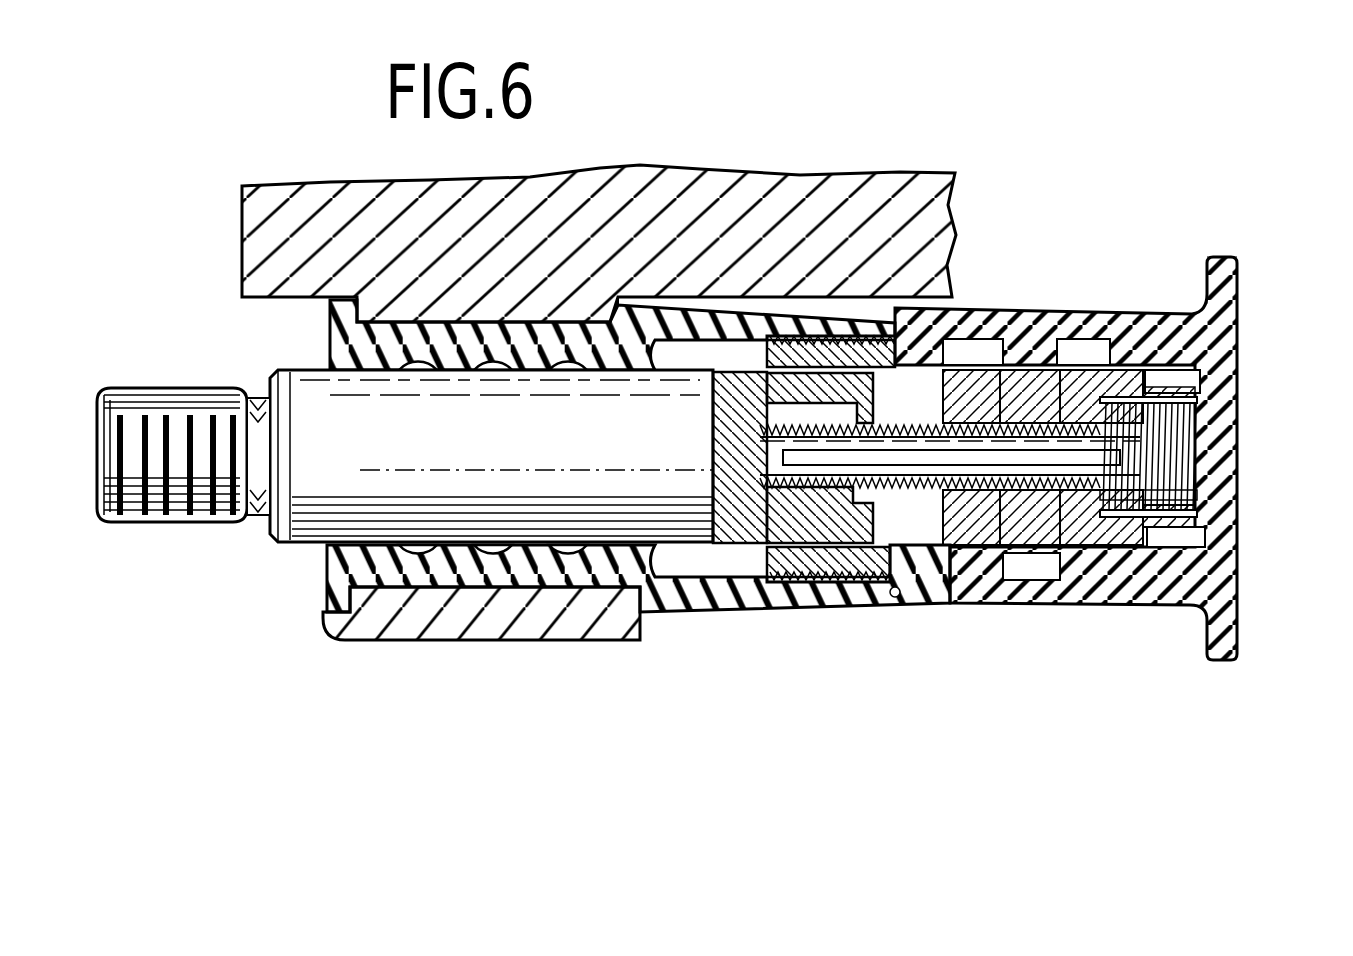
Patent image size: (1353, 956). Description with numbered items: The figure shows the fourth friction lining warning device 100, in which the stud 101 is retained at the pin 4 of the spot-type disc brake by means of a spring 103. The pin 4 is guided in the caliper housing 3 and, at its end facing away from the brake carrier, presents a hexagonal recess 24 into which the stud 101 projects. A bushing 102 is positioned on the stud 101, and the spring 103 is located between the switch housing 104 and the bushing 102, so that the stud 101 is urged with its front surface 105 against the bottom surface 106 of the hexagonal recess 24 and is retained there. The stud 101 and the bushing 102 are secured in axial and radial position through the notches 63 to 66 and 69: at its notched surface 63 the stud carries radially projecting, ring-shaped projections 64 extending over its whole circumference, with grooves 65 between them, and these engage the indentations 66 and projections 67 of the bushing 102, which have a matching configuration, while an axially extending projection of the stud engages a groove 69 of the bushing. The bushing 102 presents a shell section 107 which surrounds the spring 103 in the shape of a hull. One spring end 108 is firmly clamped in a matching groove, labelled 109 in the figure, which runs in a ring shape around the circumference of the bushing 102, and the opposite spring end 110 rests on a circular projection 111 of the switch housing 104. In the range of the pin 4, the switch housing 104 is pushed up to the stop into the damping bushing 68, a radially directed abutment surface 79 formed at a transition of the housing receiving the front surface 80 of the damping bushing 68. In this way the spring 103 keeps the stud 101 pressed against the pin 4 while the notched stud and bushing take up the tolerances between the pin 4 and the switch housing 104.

The caliper housing 3 is at (423, 613).
The pin 4 is at (307, 503).
The hexagonal recess 24 is at (745, 492).
The notch 63 is at (893, 420).
The projections 64 is at (946, 335).
The grooves 65 is at (968, 380).
The indentations 66 is at (1032, 420).
The projections 67 is at (1040, 440).
The damping bushing 68 is at (452, 340).
The groove 69 is at (1063, 495).
The abutment surface 79 is at (907, 600).
The front surface 80 is at (891, 595).
The friction lining warning device 100 is at (1280, 334).
The stud 101 is at (823, 495).
The bushing 102 is at (979, 520).
The spring 103 is at (1163, 500).
The switch housing 104 is at (1150, 330).
The front surface 105 is at (737, 545).
The bottom surface 106 is at (755, 458).
The shell section 107 is at (1197, 385).
The spring end 108 is at (1110, 495).
The spring plate 109 is at (1110, 390).
The spring end 110 is at (1197, 400).
The circular projection 111 is at (1195, 460).